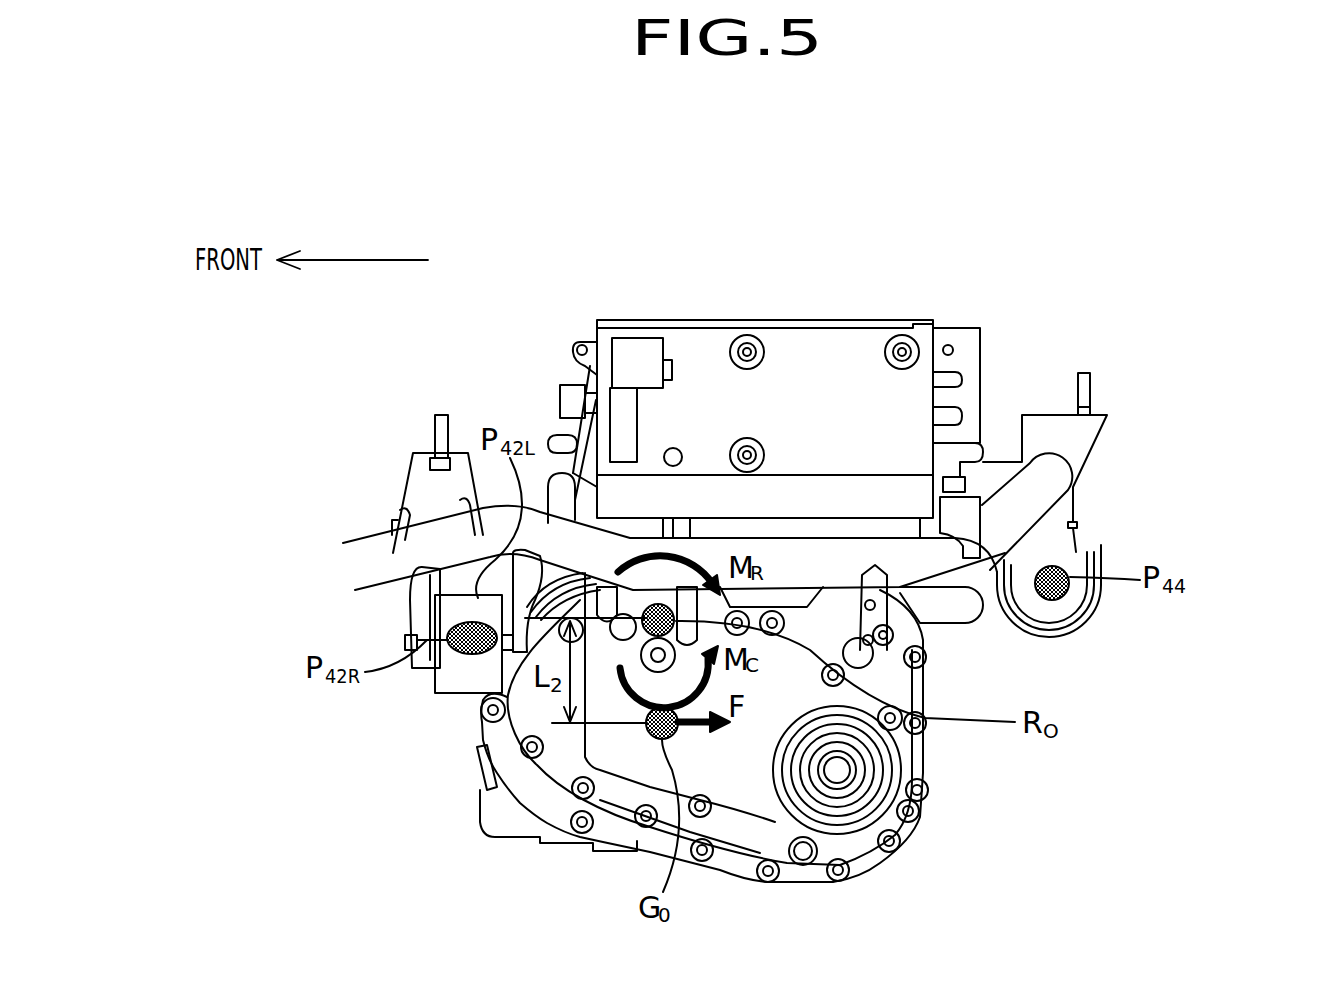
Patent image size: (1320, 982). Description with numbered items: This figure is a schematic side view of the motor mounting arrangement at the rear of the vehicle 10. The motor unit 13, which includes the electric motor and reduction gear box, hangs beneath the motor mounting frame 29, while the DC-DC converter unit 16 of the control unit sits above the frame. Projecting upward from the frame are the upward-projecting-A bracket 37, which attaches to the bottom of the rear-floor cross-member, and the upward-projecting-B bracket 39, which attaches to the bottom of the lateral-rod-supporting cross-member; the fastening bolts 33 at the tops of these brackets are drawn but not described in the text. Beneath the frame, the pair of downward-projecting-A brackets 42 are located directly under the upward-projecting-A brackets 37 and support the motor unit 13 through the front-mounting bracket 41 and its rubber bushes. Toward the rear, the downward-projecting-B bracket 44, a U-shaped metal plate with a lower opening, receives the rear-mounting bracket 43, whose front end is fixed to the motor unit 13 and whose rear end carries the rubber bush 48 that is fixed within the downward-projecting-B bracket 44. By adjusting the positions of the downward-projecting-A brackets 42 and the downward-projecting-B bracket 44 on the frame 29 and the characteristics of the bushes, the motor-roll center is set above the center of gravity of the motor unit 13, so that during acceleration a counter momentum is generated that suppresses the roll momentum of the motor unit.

The vehicle 10 is at (1230, 314).
The motor unit 13 is at (935, 806).
The DC-DC converter unit 16 is at (697, 345).
The motor mounting frame 29 is at (347, 573).
The bolt 33 is at (435, 425).
The upward-projecting-A bracket 37 is at (400, 485).
The upward-projecting-B bracket 39 is at (1083, 432).
The front-mounting bracket 41 is at (467, 690).
The downward-projecting-A bracket 42 is at (399, 616).
The rear-mounting bracket 43 is at (977, 625).
The downward-projecting-B bracket 44 is at (1060, 540).
The rubber bush 48 is at (1085, 613).